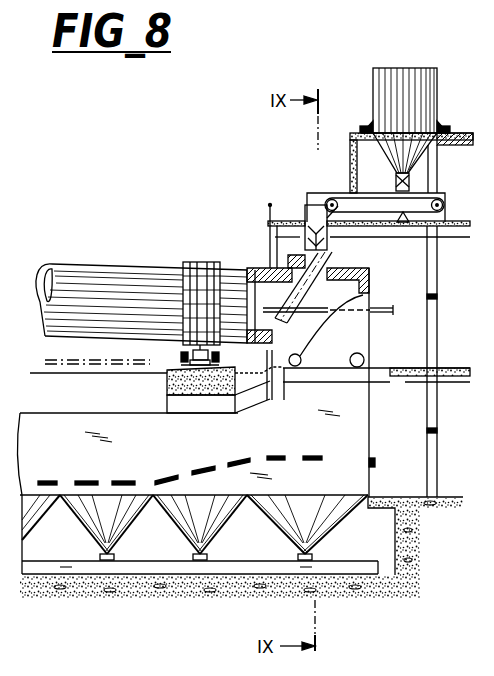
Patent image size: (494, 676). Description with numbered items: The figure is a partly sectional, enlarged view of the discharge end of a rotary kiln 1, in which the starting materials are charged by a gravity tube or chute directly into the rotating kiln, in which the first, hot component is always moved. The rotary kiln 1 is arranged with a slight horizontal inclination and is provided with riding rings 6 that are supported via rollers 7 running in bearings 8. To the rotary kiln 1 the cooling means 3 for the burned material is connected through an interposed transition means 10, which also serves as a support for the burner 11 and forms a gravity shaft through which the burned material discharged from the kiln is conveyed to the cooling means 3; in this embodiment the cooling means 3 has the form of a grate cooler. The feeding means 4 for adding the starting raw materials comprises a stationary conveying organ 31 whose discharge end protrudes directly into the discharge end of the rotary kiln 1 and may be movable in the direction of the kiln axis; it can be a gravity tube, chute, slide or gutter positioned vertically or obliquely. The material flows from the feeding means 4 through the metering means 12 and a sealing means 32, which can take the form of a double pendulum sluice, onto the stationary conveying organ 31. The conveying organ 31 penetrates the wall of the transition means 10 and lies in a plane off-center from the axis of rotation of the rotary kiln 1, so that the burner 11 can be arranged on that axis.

The rotary kiln 1 is at (139, 268).
The cooling means 3 is at (72, 445).
The feeding means 4 is at (437, 103).
The riding rings 6 is at (200, 262).
The rollers 7 is at (221, 366).
The bearings 8 is at (166, 393).
The transition means 10 is at (368, 359).
The burner 11 is at (384, 306).
The metering means 12 is at (424, 203).
The stationary conveying organ 31 is at (353, 268).
The sealing means 32 is at (313, 220).